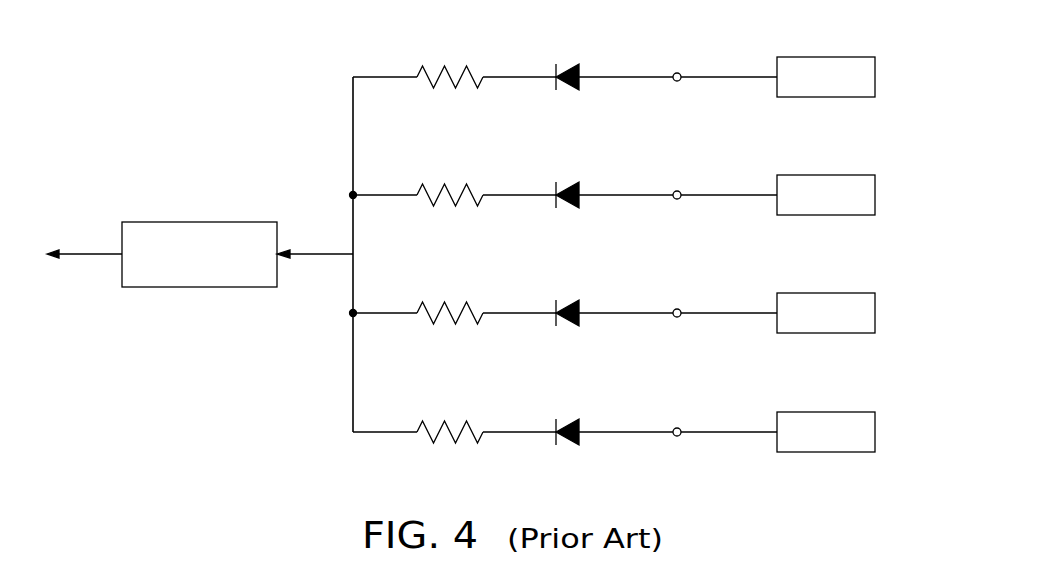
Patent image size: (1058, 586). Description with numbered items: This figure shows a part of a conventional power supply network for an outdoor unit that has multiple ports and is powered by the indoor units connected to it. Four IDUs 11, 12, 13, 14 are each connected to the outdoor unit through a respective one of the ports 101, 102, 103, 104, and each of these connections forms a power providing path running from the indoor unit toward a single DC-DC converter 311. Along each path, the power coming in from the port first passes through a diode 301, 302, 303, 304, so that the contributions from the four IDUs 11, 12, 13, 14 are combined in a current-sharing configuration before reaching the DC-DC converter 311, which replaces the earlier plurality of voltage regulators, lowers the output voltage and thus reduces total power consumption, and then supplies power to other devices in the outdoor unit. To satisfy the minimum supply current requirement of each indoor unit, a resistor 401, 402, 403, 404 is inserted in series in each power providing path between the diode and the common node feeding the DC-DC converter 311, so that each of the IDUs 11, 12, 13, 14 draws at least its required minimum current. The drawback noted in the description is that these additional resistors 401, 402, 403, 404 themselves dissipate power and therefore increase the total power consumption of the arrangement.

The DC-DC converter 311 is at (199, 222).
The resistor 401 is at (445, 64).
The resistor 402 is at (445, 182).
The resistor 403 is at (445, 300).
The resistor 404 is at (445, 419).
The diode 301 is at (570, 59).
The diode 302 is at (570, 177).
The diode 303 is at (570, 295).
The diode 304 is at (570, 414).
The port 101 is at (677, 69).
The port 102 is at (677, 187).
The port 103 is at (677, 305).
The port 104 is at (677, 424).
The IDU 11 is at (875, 77).
The IDU 12 is at (875, 195).
The IDU 13 is at (875, 313).
The IDU 14 is at (875, 432).